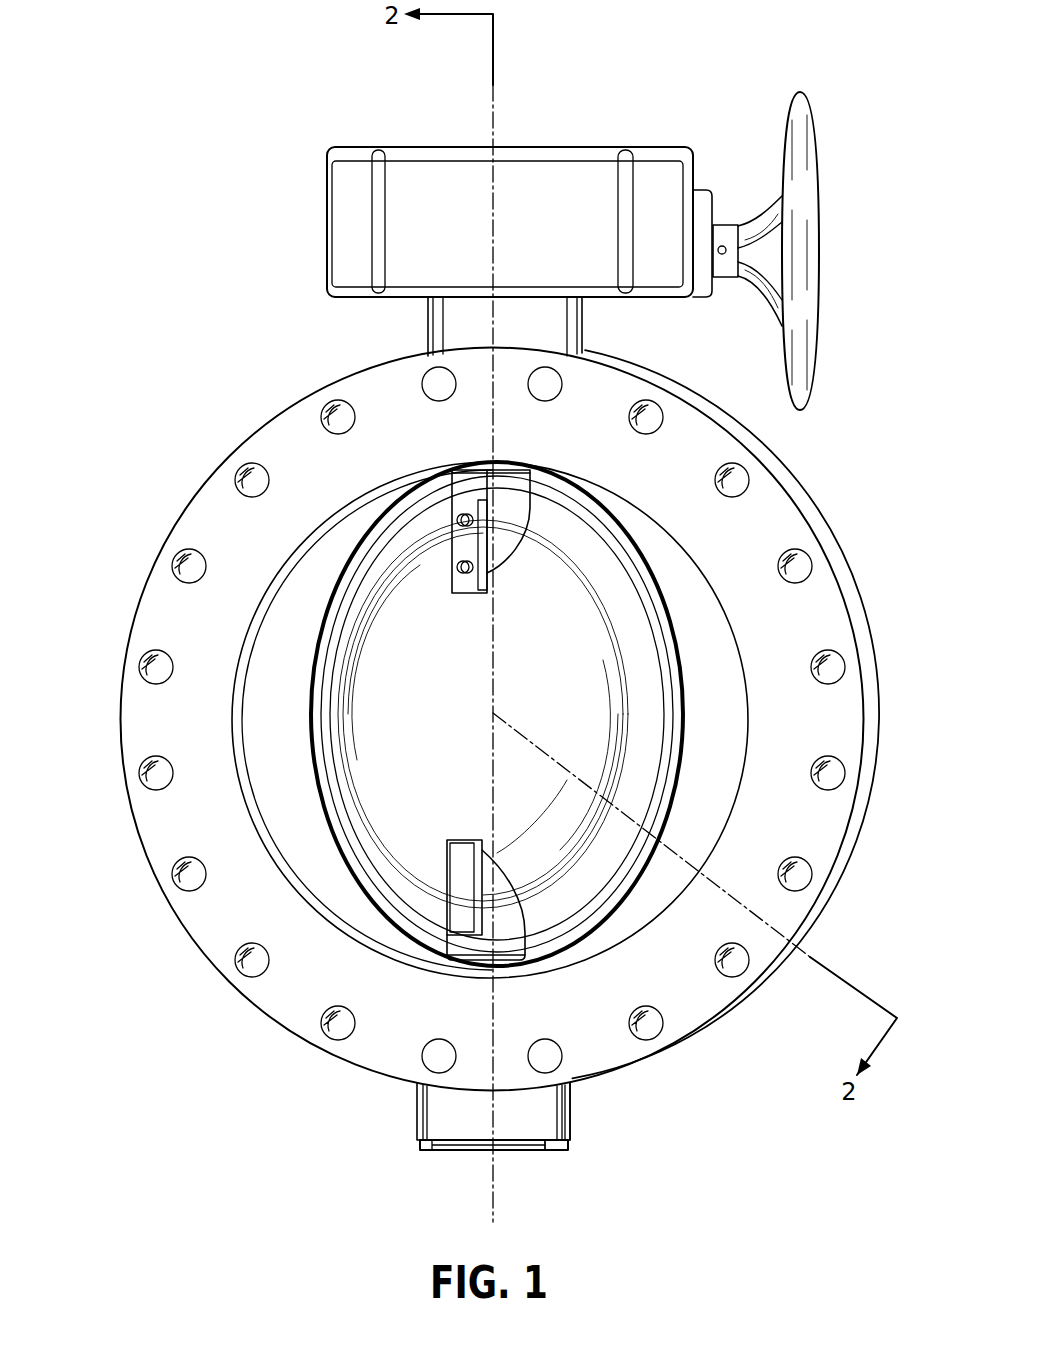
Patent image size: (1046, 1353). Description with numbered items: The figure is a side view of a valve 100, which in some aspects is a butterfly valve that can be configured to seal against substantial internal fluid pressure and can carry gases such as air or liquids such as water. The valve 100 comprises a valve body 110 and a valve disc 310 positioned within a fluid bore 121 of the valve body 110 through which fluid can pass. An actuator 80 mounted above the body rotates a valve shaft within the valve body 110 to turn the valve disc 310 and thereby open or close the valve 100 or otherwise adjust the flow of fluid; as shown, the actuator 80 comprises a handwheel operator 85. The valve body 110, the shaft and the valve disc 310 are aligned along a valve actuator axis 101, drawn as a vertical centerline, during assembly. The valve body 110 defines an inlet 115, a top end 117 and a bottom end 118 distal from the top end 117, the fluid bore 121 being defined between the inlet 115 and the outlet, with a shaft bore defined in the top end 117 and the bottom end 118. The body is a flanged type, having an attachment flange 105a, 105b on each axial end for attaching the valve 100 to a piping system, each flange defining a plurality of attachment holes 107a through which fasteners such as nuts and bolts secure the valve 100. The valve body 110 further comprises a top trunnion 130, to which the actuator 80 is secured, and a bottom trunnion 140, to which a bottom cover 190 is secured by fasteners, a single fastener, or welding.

The valve 100 is at (205, 102).
The valve actuator axis 101 is at (493, 110).
The actuator 80 is at (327, 233).
The handwheel operator 85 is at (820, 143).
The top trunnion 130 is at (412, 326).
The attachment holes 107a is at (193, 556).
The attachment flange 105a is at (827, 630).
The attachment flange 105b is at (843, 542).
The fluid bore 121 is at (245, 700).
The inlet 115 is at (747, 793).
The top end 117 is at (539, 288).
The valve disc 310 is at (447, 838).
The valve body 110 is at (437, 1112).
The bottom trunnion 140 is at (567, 1115).
The bottom end 118 is at (452, 1153).
The bottom cover 190 is at (555, 1152).